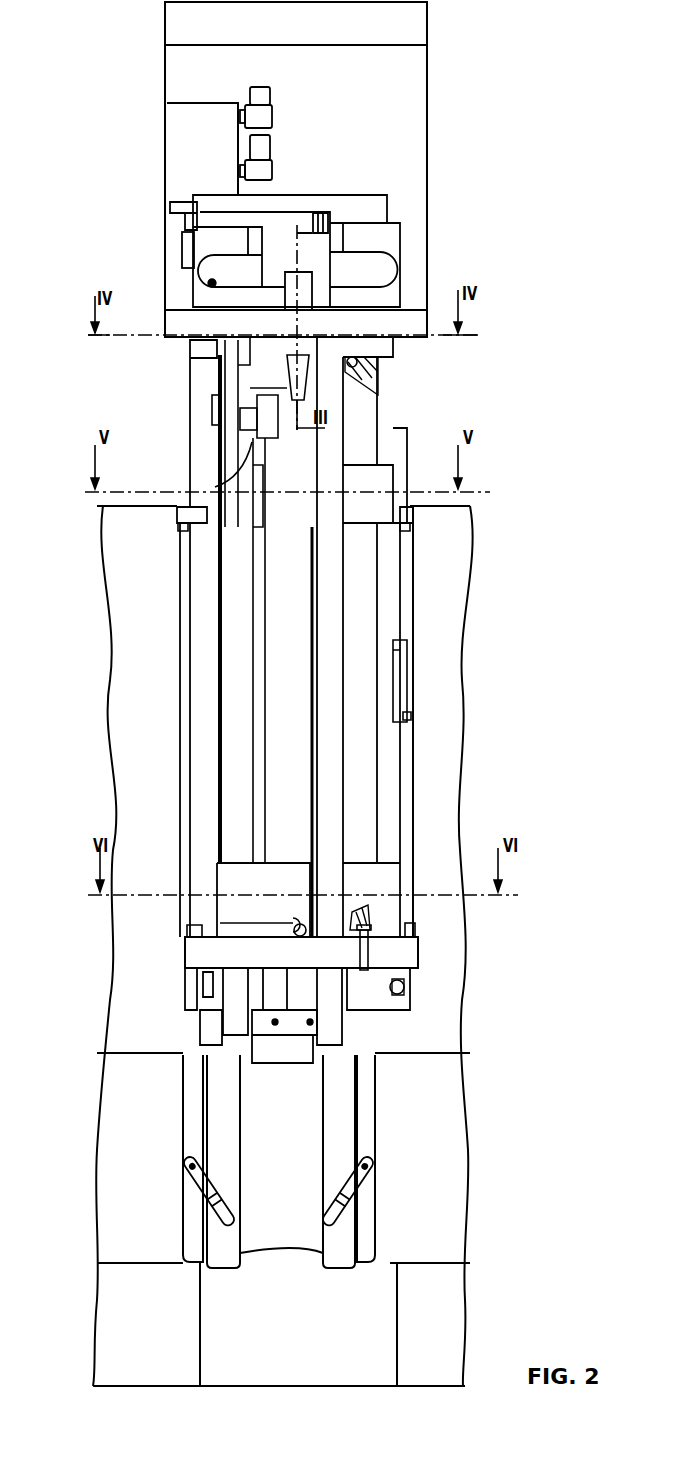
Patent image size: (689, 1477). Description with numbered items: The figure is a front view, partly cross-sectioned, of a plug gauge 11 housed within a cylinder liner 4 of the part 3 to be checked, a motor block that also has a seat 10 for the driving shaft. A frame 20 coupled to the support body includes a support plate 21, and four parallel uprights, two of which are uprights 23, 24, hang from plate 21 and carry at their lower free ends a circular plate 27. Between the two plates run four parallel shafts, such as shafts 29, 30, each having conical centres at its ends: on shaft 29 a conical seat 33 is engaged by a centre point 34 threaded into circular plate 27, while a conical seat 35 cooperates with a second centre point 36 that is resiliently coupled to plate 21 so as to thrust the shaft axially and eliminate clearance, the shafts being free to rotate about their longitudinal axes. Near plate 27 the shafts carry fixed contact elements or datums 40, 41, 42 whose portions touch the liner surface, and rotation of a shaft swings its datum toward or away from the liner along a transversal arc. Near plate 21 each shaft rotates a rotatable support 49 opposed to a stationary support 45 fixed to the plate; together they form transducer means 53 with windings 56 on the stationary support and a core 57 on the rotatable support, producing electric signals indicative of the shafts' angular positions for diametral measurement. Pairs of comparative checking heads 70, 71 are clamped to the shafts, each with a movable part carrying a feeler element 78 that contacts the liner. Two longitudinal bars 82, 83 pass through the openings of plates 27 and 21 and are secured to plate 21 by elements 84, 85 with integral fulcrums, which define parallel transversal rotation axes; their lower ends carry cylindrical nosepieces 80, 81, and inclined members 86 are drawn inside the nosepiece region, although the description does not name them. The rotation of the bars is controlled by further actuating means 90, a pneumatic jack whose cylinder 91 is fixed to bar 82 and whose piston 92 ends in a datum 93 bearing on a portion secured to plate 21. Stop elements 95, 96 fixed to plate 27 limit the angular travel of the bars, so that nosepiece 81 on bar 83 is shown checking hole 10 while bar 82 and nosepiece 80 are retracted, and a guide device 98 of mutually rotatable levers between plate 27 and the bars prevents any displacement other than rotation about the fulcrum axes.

The part to be checked 3 is at (445, 770).
The cylinder liner 4 is at (412, 824).
The seat for the driving shaft 10 is at (103, 1260).
The plug gauge 11 is at (511, 345).
The frame 20 is at (433, 114).
The support plate 21 is at (397, 325).
The upright 23 is at (327, 460).
The upright 24 is at (203, 352).
The circular plate 27 is at (200, 957).
The shaft 29 is at (363, 633).
The shaft 30 is at (233, 617).
The conical seat or centre 33 is at (372, 912).
The centre point 34 is at (368, 955).
The conical seat 35 is at (352, 385).
The second centre point 36 is at (360, 358).
The fixed contact element or datum 40 is at (417, 931).
The fixed contact element or datum 41 is at (235, 902).
The fixed contact element or datum 42 is at (187, 933).
The stationary support 45 is at (228, 367).
The rotatable support 49 is at (228, 477).
The transducer means 53 is at (262, 435).
The windings 56 is at (216, 416).
The core 57 is at (250, 425).
The checking head 70 is at (178, 510).
The checking head 71 is at (403, 687).
The feeler element 78 is at (180, 527).
The cylindrical nosepiece 80 is at (368, 1113).
The cylindrical nosepiece 81 is at (193, 1108).
The longitudinal bar 82 is at (358, 268).
The longitudinal bar 83 is at (237, 277).
The element with integral fulcrum 84 is at (385, 235).
The element with integral fulcrum 85 is at (225, 242).
The link 86 is at (187, 1180).
The further actuating means 90 is at (205, 93).
The cylinder 91 is at (185, 155).
The piston 92 is at (185, 208).
The datum 93 is at (190, 250).
The stop element 95 is at (405, 988).
The stop element 96 is at (187, 983).
The guide device 98 is at (280, 1040).